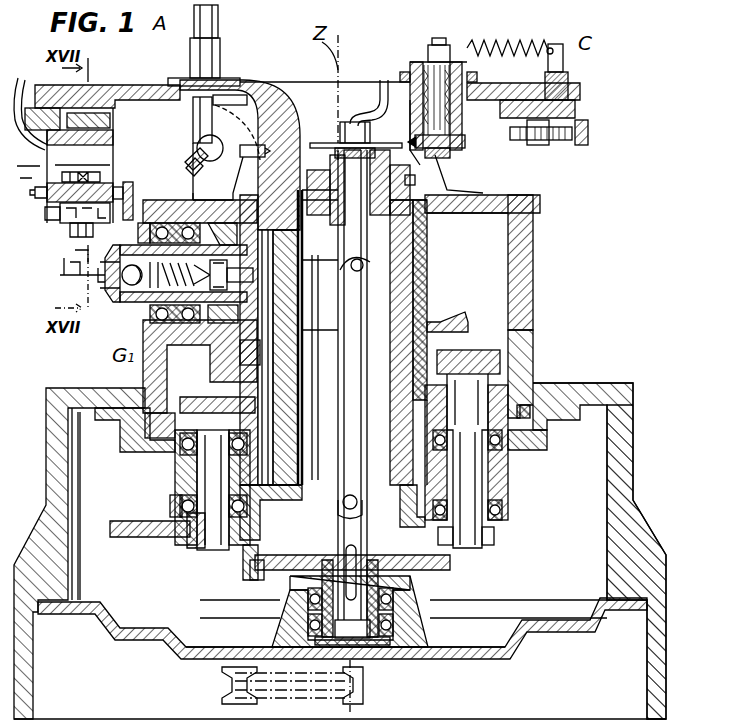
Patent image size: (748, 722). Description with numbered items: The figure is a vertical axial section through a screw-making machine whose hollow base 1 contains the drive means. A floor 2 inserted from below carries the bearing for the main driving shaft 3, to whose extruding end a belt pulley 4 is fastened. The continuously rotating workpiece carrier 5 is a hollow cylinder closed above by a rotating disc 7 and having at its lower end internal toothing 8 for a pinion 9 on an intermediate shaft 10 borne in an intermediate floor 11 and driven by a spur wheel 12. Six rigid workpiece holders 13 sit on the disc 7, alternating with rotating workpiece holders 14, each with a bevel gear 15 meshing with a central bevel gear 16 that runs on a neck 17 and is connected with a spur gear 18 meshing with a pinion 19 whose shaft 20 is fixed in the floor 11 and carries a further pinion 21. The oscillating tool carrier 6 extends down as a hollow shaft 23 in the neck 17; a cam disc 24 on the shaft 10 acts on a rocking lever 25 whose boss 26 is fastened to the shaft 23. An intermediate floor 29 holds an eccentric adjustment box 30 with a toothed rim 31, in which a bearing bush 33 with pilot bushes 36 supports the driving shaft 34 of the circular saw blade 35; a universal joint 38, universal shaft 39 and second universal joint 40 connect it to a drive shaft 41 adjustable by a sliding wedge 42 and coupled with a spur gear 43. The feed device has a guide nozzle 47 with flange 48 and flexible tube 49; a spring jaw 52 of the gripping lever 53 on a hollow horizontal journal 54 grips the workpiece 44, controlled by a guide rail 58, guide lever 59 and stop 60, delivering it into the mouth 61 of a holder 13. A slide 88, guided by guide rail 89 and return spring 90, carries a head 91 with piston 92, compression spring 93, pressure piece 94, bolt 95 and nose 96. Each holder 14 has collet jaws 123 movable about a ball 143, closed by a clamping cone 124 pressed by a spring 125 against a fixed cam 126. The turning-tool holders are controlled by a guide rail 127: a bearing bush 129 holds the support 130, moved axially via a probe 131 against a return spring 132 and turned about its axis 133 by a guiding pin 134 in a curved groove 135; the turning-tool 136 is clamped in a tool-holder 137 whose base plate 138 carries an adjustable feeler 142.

The hollow base 1 is at (48, 478).
The floor 2 is at (132, 630).
The main driving shaft 3 is at (282, 658).
The belt pulley 4 is at (228, 684).
The workpiece carrier 5 is at (530, 292).
The tool carrier 6 is at (150, 92).
The rotating disc 7 is at (258, 218).
The internal toothing 8 is at (185, 397).
The pinion 9 is at (208, 397).
The intermediate shaft 10 is at (205, 462).
The intermediate floor 11 is at (135, 440).
The spur wheel 12 is at (115, 540).
The rigid workpiece holder 13 is at (462, 184).
The rotating workpiece holder 14 is at (126, 290).
The bevel gear 15 is at (225, 232).
The central bevel gear 16 is at (460, 318).
The neck 17 is at (270, 415).
The spur gear 18 is at (445, 348).
The pinion 19 is at (490, 385).
The shaft 20 is at (465, 472).
The pinion 21 is at (496, 536).
The hollow shaft 23 is at (296, 380).
The cam disc 24 is at (175, 500).
The rocking lever 25 is at (285, 500).
The boss 26 is at (425, 485).
The intermediate floor 29 is at (325, 250).
The adjustment box 30 is at (405, 225).
The toothed rim 31 is at (308, 190).
The bearing bush 33 is at (378, 180).
The driving shaft 34 is at (352, 240).
The circular saw blade 35 is at (335, 130).
The pilot bushes 36 is at (340, 158).
The universal joint 38 is at (360, 272).
The universal shaft 39 is at (345, 455).
The second universal joint 40 is at (358, 508).
The drive shaft 41 is at (368, 532).
The sliding wedge 42 is at (345, 562).
The spur gear 43 is at (250, 568).
The workpiece 44 is at (65, 282).
The guide nozzle 47 is at (218, 58).
The flange 48 is at (240, 70).
The flexible tube 49 is at (215, 15).
The spring jaw 52 is at (238, 105).
The gripping lever 53 is at (196, 120).
The hollow horizontal journal 54 is at (216, 142).
The guide rail 58 is at (185, 160).
The guide lever 59 is at (179, 191).
The stop 60 is at (200, 150).
The mouth 61 is at (238, 156).
The slide 88 is at (515, 140).
The guide rail 89 is at (582, 147).
The return spring 90 is at (525, 40).
The head 91 is at (420, 68).
The piston 92 is at (408, 140).
The compression spring 93 is at (415, 115).
The pressure piece 94 is at (462, 137).
The bolt 95 is at (440, 38).
The nose 96 is at (452, 152).
The collet jaws 123 is at (140, 258).
The clamping cone 124 is at (290, 300).
The spring 125 is at (178, 290).
The fixed cam 126 is at (285, 345).
The guide rail 127 is at (122, 190).
The bearing bush 129 is at (112, 118).
The support 130 is at (112, 138).
The probe 131 is at (45, 210).
The return spring 132 is at (22, 78).
The longitudinal axis 133 is at (24, 174).
The guiding pin 134 is at (82, 164).
The curved groove 135 is at (95, 115).
The turning-tool 136 is at (68, 268).
The tool-holder 137 is at (76, 250).
The base plate 138 is at (70, 227).
The adjustable feeler 142 is at (150, 235).
The ball 143 is at (120, 295).